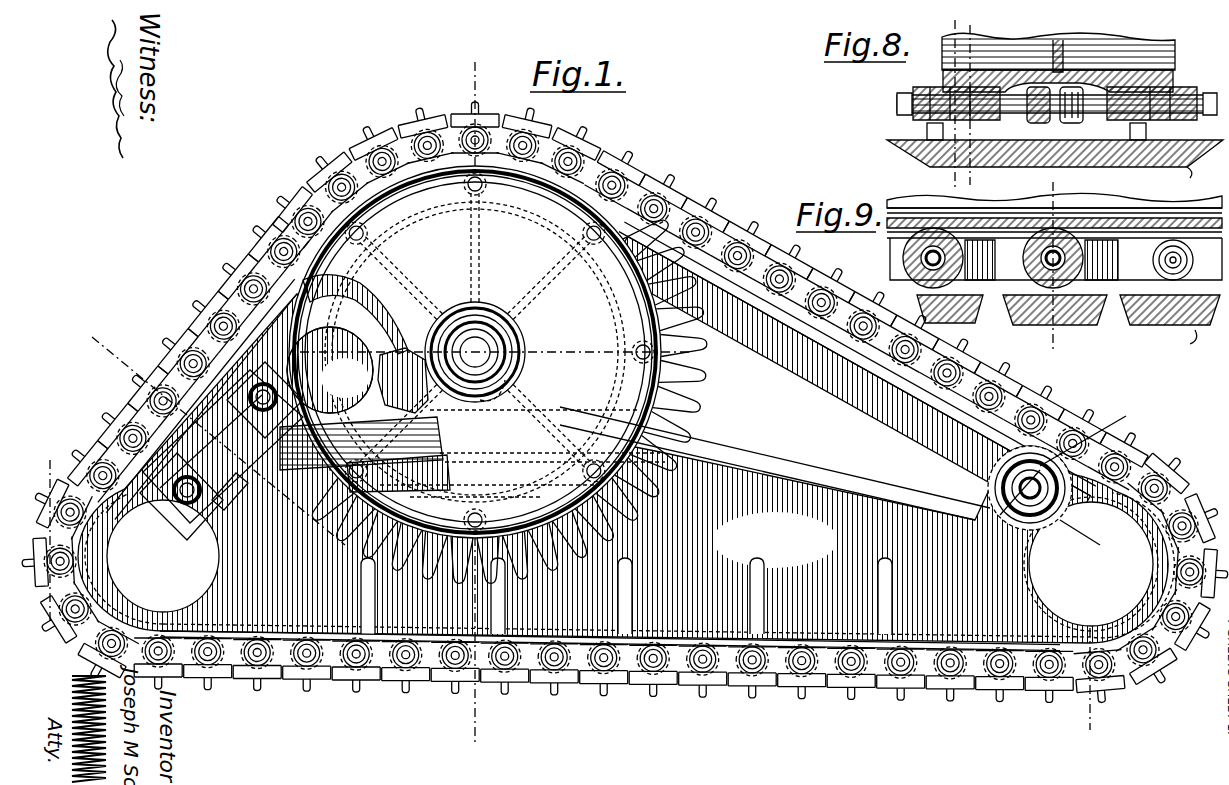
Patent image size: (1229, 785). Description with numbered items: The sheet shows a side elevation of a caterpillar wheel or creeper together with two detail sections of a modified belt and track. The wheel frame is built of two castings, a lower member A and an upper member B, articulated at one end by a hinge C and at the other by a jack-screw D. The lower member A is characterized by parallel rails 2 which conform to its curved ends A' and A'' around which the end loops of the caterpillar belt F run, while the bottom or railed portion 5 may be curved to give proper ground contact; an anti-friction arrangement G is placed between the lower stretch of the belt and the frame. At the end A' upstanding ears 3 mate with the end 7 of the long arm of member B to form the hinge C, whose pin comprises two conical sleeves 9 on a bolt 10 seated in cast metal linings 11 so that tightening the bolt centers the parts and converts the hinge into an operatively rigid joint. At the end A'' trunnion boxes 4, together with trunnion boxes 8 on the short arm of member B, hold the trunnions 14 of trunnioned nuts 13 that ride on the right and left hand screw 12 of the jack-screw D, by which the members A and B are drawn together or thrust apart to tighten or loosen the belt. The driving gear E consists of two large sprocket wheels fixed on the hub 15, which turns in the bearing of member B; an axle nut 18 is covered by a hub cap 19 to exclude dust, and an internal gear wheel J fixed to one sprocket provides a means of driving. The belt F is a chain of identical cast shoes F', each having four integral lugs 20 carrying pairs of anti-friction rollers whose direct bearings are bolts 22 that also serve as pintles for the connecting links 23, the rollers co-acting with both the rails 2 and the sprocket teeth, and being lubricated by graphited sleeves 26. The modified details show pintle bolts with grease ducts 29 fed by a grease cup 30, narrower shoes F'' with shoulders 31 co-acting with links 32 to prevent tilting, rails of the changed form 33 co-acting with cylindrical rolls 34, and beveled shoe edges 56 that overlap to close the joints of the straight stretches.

In FIG. 1, the parallel rails 2 is at (485, 730).
In FIG. 1, the upstanding ears or lugs 3 is at (109, 340).
In FIG. 1, the trunnion boxes 4 is at (178, 455).
In FIG. 1, the bottom or railed portion 5 is at (1099, 718).
In FIG. 8, the bottom or railed portion 5 is at (1062, 60).
In FIG. 1, the end 7 is at (1050, 466).
In FIG. 1, the trunnion boxes 8 is at (240, 384).
In FIG. 9, the trunnion boxes 8 is at (1063, 343).
In FIG. 1, the conical sleeves 9 is at (1002, 478).
In FIG. 8, the conical sleeves 9 is at (963, 181).
In FIG. 8, the bolt 10 is at (975, 105).
In FIG. 1, the cast metal linings 11 is at (1080, 529).
In FIG. 1, the right and left hand screw 12 is at (240, 505).
In FIG. 1, the trunnioned nuts or sleeves 13 is at (330, 370).
In FIG. 1, the trunnions 14 is at (165, 470).
In FIG. 1, the hub 15 is at (185, 512).
In FIG. 1, the axle nut 18 is at (522, 345).
In FIG. 1, the hub cap 19 is at (508, 400).
In FIG. 1, the integral lugs 20 is at (505, 667).
In FIG. 8, the integral lugs 20 is at (1110, 120).
In FIG. 1, the bolts 22 is at (700, 684).
In FIG. 8, the bolts 22 is at (1028, 100).
In FIG. 9, the bolts 22 is at (905, 257).
In FIG. 1, the connecting links 23 is at (285, 640).
In FIG. 8, the graphited sleeves or bushing 26 is at (945, 90).
In FIG. 8, the grease ducts 29 is at (1032, 122).
In FIG. 9, the grease ducts 29 is at (1025, 230).
In FIG. 8, the grease cup 30 is at (1068, 124).
In FIG. 8, the shoulders 31 is at (935, 150).
In FIG. 9, the shoulders 31 is at (1150, 258).
In FIG. 8, the links 32 is at (910, 122).
In FIG. 9, the links 32 is at (1056, 259).
In FIG. 8, the rails 33 is at (1000, 70).
In FIG. 8, the cylindrical rolls 34 is at (1165, 90).
In FIG. 9, the cylindrical rolls 34 is at (1000, 262).
In FIG. 1, the beveled edges of the shoes 56 is at (388, 680).
In FIG. 9, the beveled edges of the shoes 56 is at (1125, 318).
In FIG. 1, the lower frame member A is at (623, 468).
In FIG. 1, the frame end A' is at (1091, 564).
In FIG. 1, the frame end A'' is at (163, 556).
In FIG. 1, the upper frame member B is at (849, 383).
In FIG. 1, the hinge C is at (1090, 447).
In FIG. 1, the jack-screw D is at (225, 450).
In FIG. 1, the driving gear E is at (475, 352).
In FIG. 1, the caterpillar belt F is at (625, 414).
In FIG. 1, the shoes F' is at (560, 682).
In FIG. 8, the narrower shoes F'' is at (1202, 171).
In FIG. 9, the narrower shoes F'' is at (1183, 341).
In FIG. 1, the anti-friction arrangement G is at (716, 646).
In FIG. 1, the internal gear wheel J is at (625, 391).